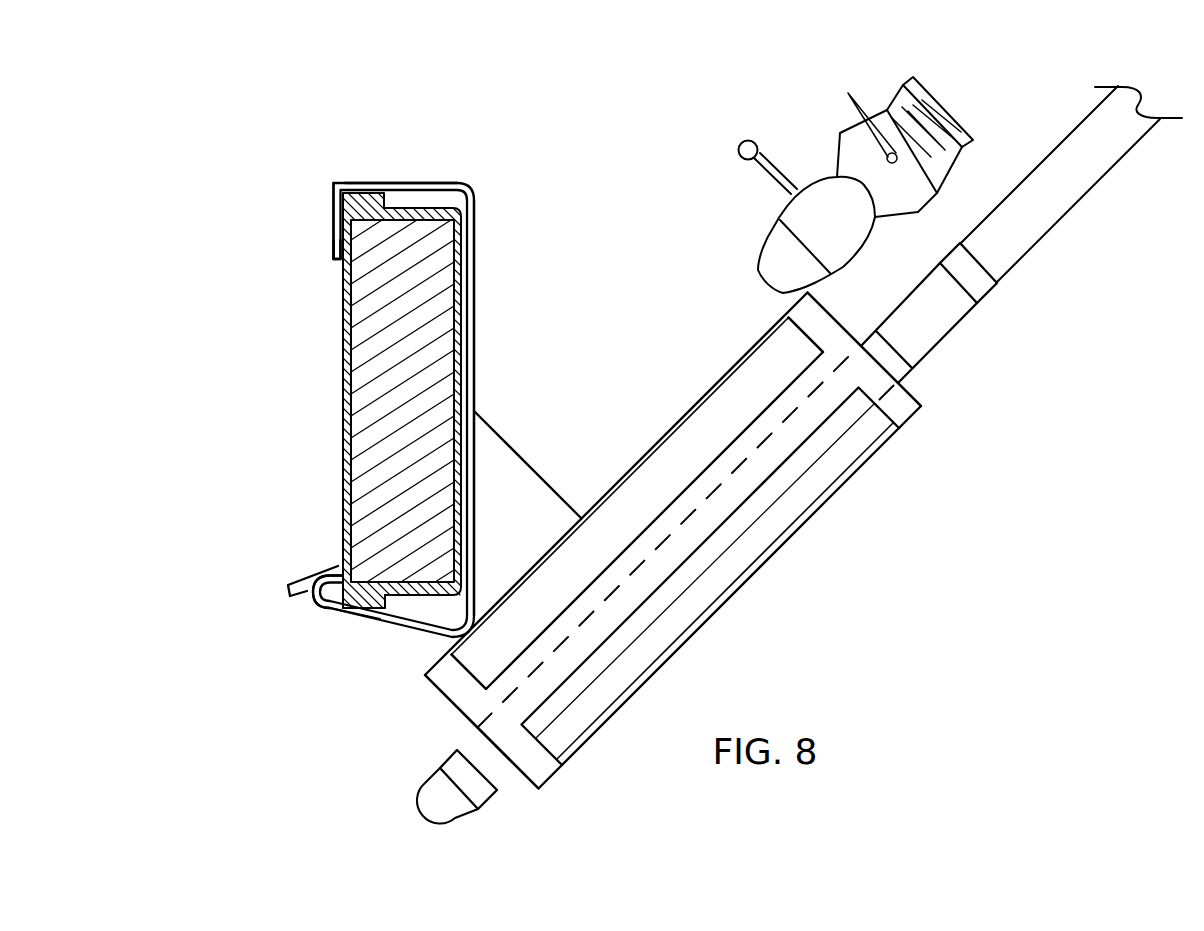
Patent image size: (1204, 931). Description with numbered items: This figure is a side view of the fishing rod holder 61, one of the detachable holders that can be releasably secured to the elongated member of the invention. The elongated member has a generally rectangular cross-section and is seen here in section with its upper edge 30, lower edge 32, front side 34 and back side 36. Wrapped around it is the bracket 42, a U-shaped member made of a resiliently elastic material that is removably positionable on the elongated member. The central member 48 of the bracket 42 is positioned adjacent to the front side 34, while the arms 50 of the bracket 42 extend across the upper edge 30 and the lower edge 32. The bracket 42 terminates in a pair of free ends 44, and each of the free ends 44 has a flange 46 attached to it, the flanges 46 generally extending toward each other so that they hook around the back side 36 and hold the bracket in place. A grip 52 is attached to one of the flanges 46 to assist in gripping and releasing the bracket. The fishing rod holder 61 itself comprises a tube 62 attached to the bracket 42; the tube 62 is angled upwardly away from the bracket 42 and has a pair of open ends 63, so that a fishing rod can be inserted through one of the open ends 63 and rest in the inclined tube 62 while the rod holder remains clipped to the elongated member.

The upper edge 30 is at (400, 372).
The lower edge 32 is at (384, 613).
The front side 34 is at (452, 390).
The back side 36 is at (343, 350).
The bracket 42 is at (402, 405).
The free ends 44 is at (329, 183).
The flange 46 is at (332, 248).
The central member 48 is at (475, 263).
The arms 50 is at (368, 183).
The grip 52 is at (268, 610).
The fishing rod holder 61 is at (525, 457).
The tube 62 is at (738, 570).
The open ends 63 is at (906, 418).